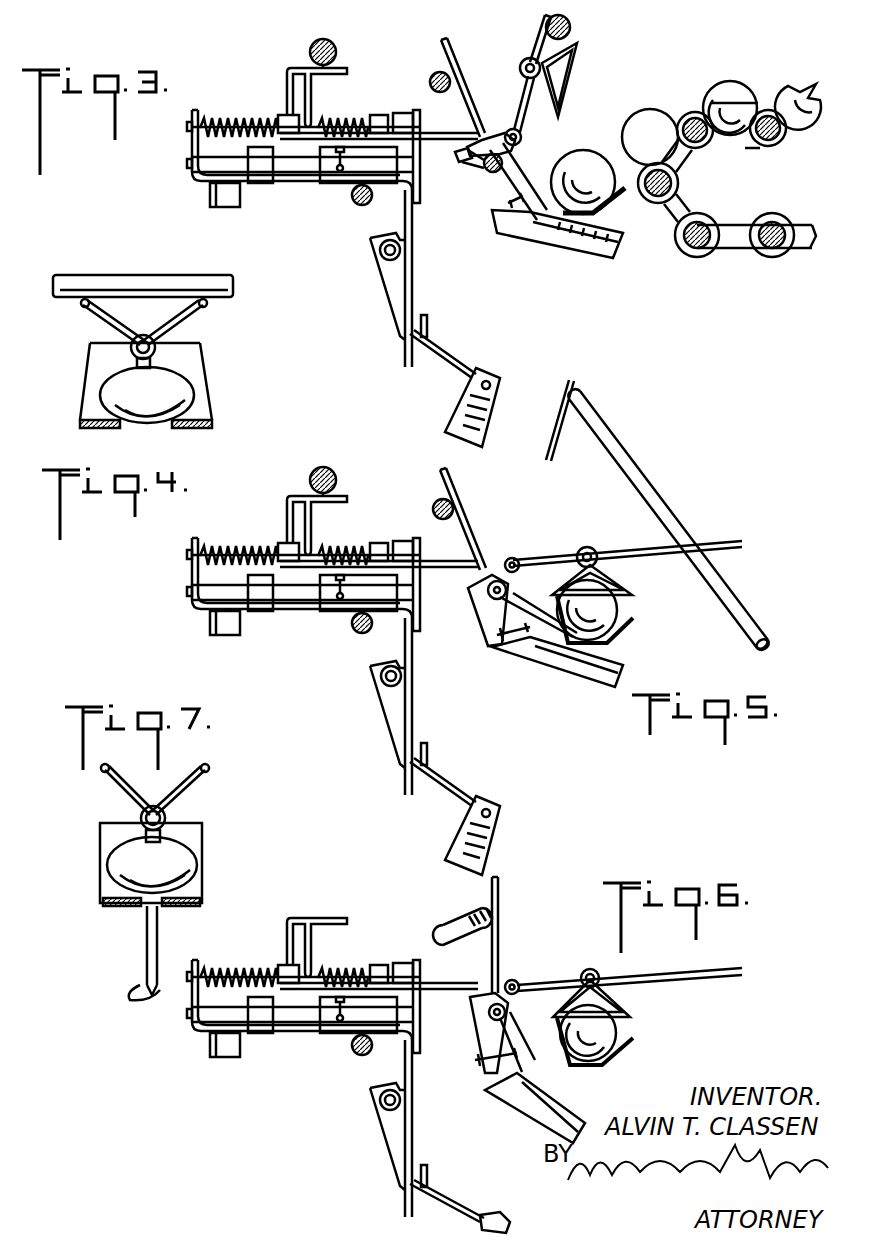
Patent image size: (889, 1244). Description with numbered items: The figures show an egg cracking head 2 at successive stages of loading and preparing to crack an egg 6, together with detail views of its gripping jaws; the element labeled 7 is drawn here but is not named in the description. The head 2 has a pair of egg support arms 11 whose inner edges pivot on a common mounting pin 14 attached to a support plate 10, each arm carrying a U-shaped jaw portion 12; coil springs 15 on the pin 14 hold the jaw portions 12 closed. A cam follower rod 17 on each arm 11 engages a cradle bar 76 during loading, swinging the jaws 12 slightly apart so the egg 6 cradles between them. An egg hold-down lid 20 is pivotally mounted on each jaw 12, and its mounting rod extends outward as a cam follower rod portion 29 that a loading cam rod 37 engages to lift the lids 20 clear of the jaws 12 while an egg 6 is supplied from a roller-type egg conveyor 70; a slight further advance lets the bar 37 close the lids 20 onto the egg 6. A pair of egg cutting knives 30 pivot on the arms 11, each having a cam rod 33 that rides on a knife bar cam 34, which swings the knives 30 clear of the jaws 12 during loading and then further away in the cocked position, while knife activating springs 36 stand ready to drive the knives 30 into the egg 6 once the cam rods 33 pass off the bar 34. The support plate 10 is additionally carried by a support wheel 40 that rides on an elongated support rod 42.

In FIG. 3, the egg cracking head 2 is at (303, 238).
In FIG. 5, the egg cracking head 2 is at (303, 643).
In FIG. 6, the egg cracking head 2 is at (303, 1068).
In FIG. 3, the egg 6 is at (587, 157).
In FIG. 4, the egg 6 is at (178, 378).
In FIG. 7, the egg 6 is at (190, 862).
In FIG. 5, the egg 6 is at (587, 610).
In FIG. 6, the egg 6 is at (588, 1033).
In FIG. 3, the foot pedal 7 is at (492, 400).
In FIG. 5, the foot pedal 7 is at (486, 835).
In FIG. 3, the support plate 10 is at (402, 252).
In FIG. 5, the support plate 10 is at (423, 731).
In FIG. 6, the support plate 10 is at (440, 1158).
In FIG. 3, the egg support arm 11 is at (365, 141).
In FIG. 5, the egg support arm 11 is at (379, 607).
In FIG. 6, the egg support arm 11 is at (379, 1027).
In FIG. 3, the jaw portion 12 is at (617, 208).
In FIG. 4, the jaw portion 12 is at (80, 424).
In FIG. 7, the jaw portion 12 is at (103, 908).
In FIG. 5, the jaw portion 12 is at (619, 624).
In FIG. 6, the jaw portion 12 is at (615, 1049).
In FIG. 3, the mounting pin 14 is at (248, 118).
In FIG. 5, the mounting pin 14 is at (239, 535).
In FIG. 6, the mounting pin 14 is at (239, 961).
In FIG. 3, the coil spring 15 is at (343, 118).
In FIG. 5, the coil spring 15 is at (343, 533).
In FIG. 6, the coil spring 15 is at (350, 956).
In FIG. 3, the cam follower rod 17 is at (289, 68).
In FIG. 4, the cam follower rod 17 is at (82, 316).
In FIG. 7, the cam follower rod 17 is at (104, 778).
In FIG. 5, the cam follower rod 17 is at (296, 520).
In FIG. 6, the cam follower rod 17 is at (317, 923).
In FIG. 3, the egg hold-down lid 20 is at (578, 48).
In FIG. 5, the egg hold-down lid 20 is at (619, 571).
In FIG. 6, the egg hold-down lid 20 is at (619, 996).
In FIG. 3, the cam follower rod portion 29 is at (535, 25).
In FIG. 5, the cam follower rod portion 29 is at (633, 533).
In FIG. 6, the cam follower rod portion 29 is at (629, 964).
In FIG. 3, the egg cutting knife 30 is at (583, 247).
In FIG. 7, the egg cutting knife 30 is at (128, 984).
In FIG. 5, the egg cutting knife 30 is at (557, 676).
In FIG. 6, the egg cutting knife 30 is at (533, 1108).
In FIG. 3, the cam rod 33 is at (441, 40).
In FIG. 5, the cam rod 33 is at (473, 519).
In FIG. 6, the cam rod 33 is at (523, 935).
In FIG. 3, the knife bar cam 34 is at (431, 78).
In FIG. 5, the knife bar cam 34 is at (426, 490).
In FIG. 6, the knife bar cam 34 is at (458, 913).
In FIG. 3, the knife activating spring 36 is at (485, 150).
In FIG. 5, the knife activating spring 36 is at (522, 602).
In FIG. 6, the knife activating spring 36 is at (502, 1026).
In FIG. 3, the cam rod 37 is at (572, 28).
In FIG. 5, the cam rod 37 is at (657, 515).
In FIG. 3, the support wheel 40 is at (378, 155).
In FIG. 3, the support rod 42 is at (355, 203).
In FIG. 6, the support rod 42 is at (342, 1065).
In FIG. 3, the egg conveyor 70 is at (690, 108).
In FIG. 3, the cradle bar 76 is at (333, 47).
In FIG. 4, the cradle bar 76 is at (58, 300).
In FIG. 5, the cradle bar 76 is at (303, 475).